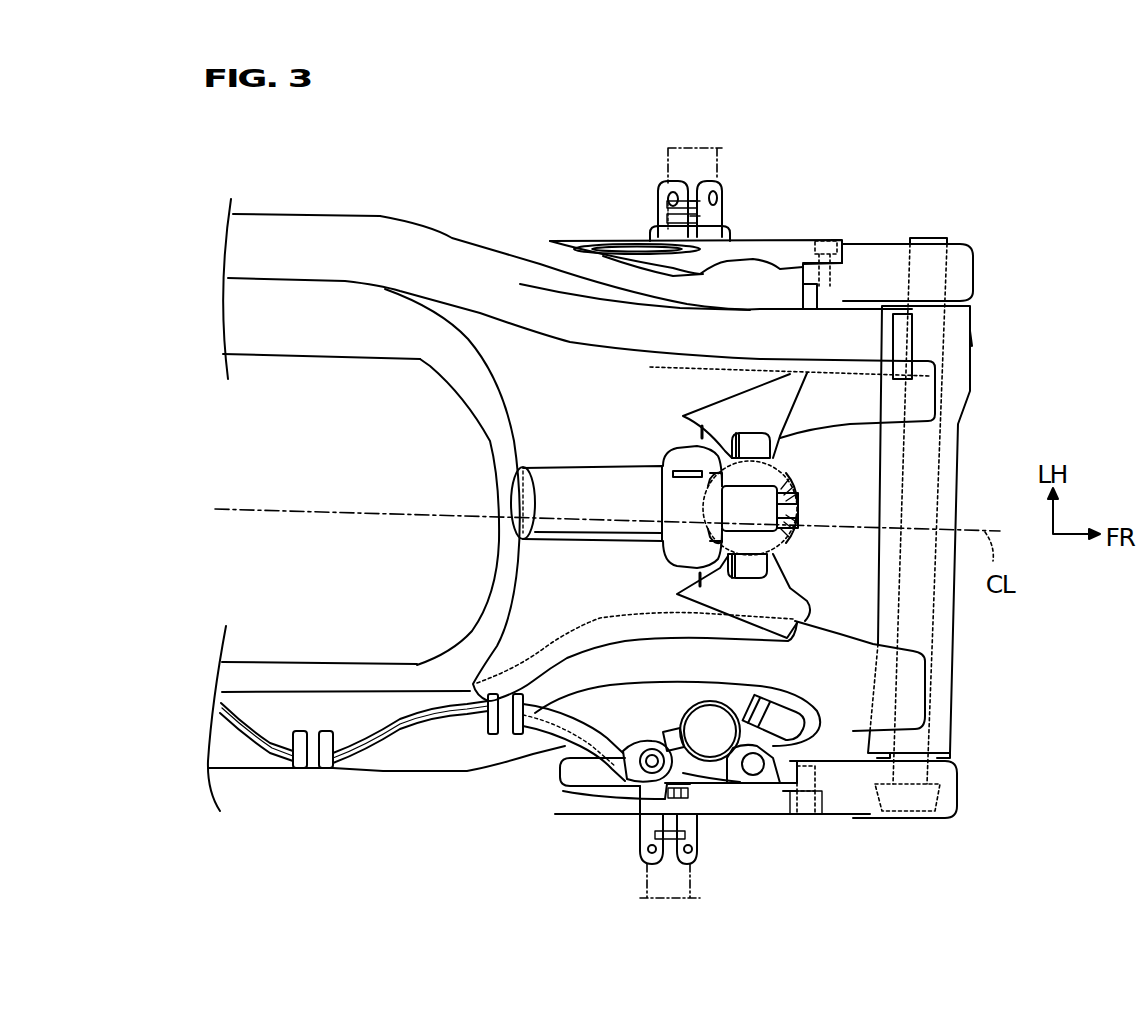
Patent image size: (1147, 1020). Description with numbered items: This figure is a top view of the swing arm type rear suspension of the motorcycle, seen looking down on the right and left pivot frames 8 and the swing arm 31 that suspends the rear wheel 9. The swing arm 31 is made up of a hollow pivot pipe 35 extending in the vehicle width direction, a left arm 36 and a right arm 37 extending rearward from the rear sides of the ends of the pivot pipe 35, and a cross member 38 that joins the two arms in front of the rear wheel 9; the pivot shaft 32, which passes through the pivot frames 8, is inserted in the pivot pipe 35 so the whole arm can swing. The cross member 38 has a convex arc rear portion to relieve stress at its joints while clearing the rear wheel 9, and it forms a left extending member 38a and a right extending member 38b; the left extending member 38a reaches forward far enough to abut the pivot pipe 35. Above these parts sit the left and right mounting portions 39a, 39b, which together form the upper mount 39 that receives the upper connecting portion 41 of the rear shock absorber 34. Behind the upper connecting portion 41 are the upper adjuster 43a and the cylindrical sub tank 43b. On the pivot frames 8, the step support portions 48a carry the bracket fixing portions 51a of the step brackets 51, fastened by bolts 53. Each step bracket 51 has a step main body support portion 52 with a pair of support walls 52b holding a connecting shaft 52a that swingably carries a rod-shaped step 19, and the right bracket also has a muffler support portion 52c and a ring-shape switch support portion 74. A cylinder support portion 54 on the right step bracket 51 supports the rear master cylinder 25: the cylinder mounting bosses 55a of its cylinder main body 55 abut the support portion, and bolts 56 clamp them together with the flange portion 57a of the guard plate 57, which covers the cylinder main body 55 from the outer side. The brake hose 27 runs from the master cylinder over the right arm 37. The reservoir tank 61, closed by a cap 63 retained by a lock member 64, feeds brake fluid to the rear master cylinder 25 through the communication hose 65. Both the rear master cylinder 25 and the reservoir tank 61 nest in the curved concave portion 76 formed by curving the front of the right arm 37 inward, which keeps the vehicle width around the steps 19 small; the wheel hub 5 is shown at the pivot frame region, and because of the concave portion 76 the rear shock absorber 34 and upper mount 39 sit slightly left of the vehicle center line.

The rear wheel 5 is at (960, 250).
The pivot frame 8 is at (904, 534).
The rear wheel 9 is at (297, 372).
The step 19 is at (718, 163).
The rear master cylinder 25 is at (620, 735).
The brake hose 27 is at (447, 745).
The swing arm 31 is at (452, 237).
The pivot shaft 32 is at (930, 460).
The rear shock absorber 34 is at (802, 490).
The pivot pipe 35 is at (955, 495).
The left arm member 36 is at (333, 228).
The right arm member 37 is at (383, 768).
The cross member 38 is at (520, 585).
The left extending member 38a is at (857, 410).
The right extending member 38b is at (808, 612).
The upper mount 39 is at (782, 532).
The left mounting portion 39a is at (783, 440).
The right mounting portion 39b is at (778, 562).
The upper connecting portion 41 is at (774, 509).
The upper adjuster 43a is at (683, 520).
The sub tank 43b is at (595, 543).
The step support portion 48a is at (807, 284).
The step bracket 51 is at (772, 237).
The bracket fixing portion 51a is at (819, 240).
The step main body support portion 52 is at (710, 237).
The connecting shaft 52a is at (672, 180).
The support wall 52b is at (668, 225).
The muffler support portion 52c is at (570, 788).
The bolt 53 is at (834, 242).
The cylinder support portion 54 is at (713, 793).
The cylinder main body 55 is at (647, 761).
The cylinder mounting boss 55a is at (625, 716).
The bolt 56 is at (672, 800).
The guard plate 57 is at (615, 800).
The flange portion 57a is at (705, 700).
The reservoir tank 61 is at (740, 697).
The cap 63 is at (761, 706).
The lock member 64 is at (673, 702).
The communication hose 65 is at (790, 713).
The ring-shape switch support portion 74 is at (785, 800).
The curved concave portion 76 is at (737, 690).